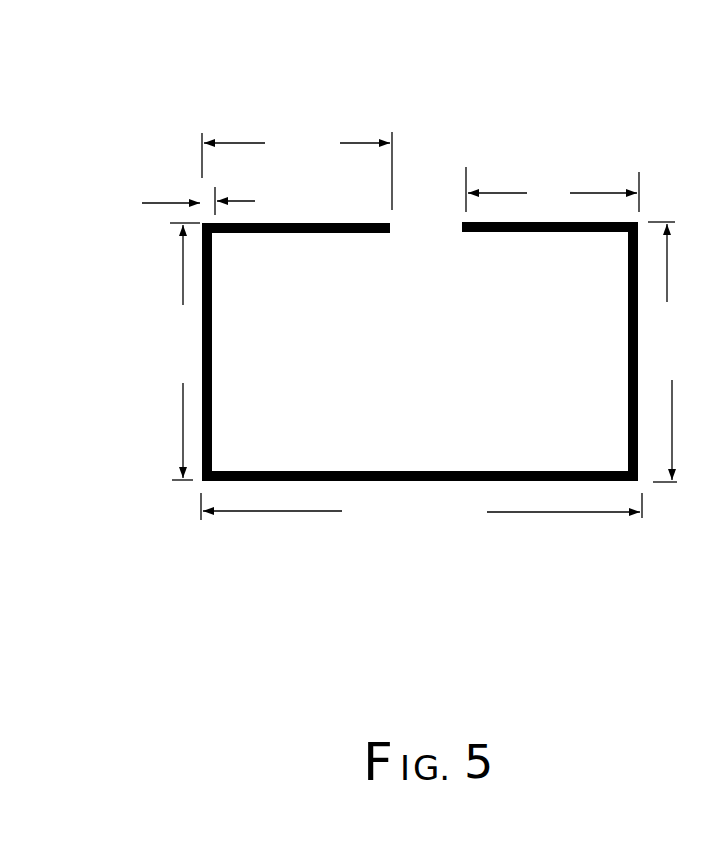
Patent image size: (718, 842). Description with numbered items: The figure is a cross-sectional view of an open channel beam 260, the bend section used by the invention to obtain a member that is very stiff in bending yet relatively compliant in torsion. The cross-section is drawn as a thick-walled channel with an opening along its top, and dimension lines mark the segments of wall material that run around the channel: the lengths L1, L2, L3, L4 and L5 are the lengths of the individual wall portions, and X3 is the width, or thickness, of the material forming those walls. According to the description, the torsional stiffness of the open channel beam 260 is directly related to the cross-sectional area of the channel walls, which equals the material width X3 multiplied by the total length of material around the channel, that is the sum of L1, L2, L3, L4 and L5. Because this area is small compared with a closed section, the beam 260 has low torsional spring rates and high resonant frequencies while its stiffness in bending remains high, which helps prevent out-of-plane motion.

The open channel beam 260 is at (540, 117).
The length of material segment L1 is at (552, 189).
The length of material segment L2 is at (675, 352).
The length of material segment L3 is at (421, 513).
The length of material segment L4 is at (179, 351).
The length of material segment L5 is at (297, 171).
The width of the material X3 is at (177, 206).